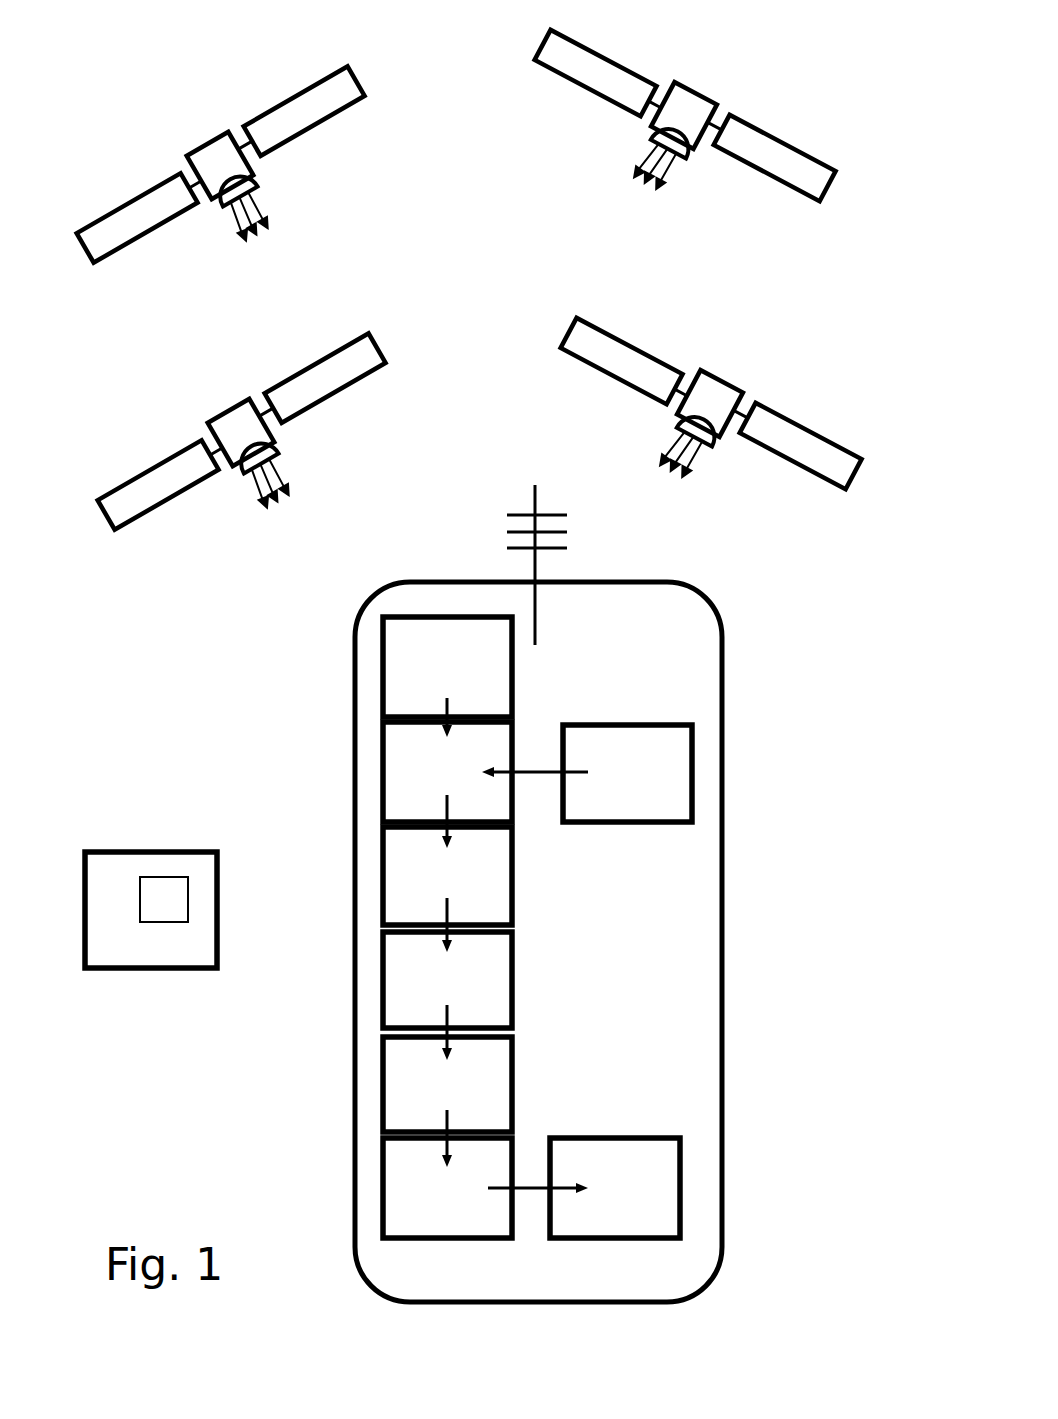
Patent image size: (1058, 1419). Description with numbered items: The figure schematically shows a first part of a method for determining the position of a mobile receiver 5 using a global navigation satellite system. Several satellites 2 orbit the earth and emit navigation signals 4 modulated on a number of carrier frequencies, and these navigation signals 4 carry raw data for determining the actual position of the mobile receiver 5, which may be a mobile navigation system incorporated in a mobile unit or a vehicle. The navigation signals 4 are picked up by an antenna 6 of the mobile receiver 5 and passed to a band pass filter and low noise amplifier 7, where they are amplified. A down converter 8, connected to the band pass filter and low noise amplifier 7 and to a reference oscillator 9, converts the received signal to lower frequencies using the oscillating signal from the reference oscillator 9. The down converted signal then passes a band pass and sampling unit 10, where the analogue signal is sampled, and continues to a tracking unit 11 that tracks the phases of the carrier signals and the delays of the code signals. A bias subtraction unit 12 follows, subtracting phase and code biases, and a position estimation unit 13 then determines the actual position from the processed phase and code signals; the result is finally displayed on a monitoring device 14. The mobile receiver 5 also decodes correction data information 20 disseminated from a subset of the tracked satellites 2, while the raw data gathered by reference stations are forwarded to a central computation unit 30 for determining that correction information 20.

The satellites 2 is at (220, 147).
The navigation signals 4 is at (260, 210).
The mobile receiver 5 is at (782, 667).
The antenna 6 is at (540, 492).
The band pass filter and low noise amplifier 7 is at (450, 692).
The down converter 8 is at (456, 787).
The reference oscillator 9 is at (637, 799).
The band pass and sampling unit 10 is at (448, 888).
The tracking unit 11 is at (448, 992).
The bias subtraction unit 12 is at (463, 1103).
The position estimation unit 13 is at (458, 1207).
The monitoring device 14 is at (630, 1200).
The correction data information 20 is at (164, 899).
The central computation unit 30 is at (151, 953).